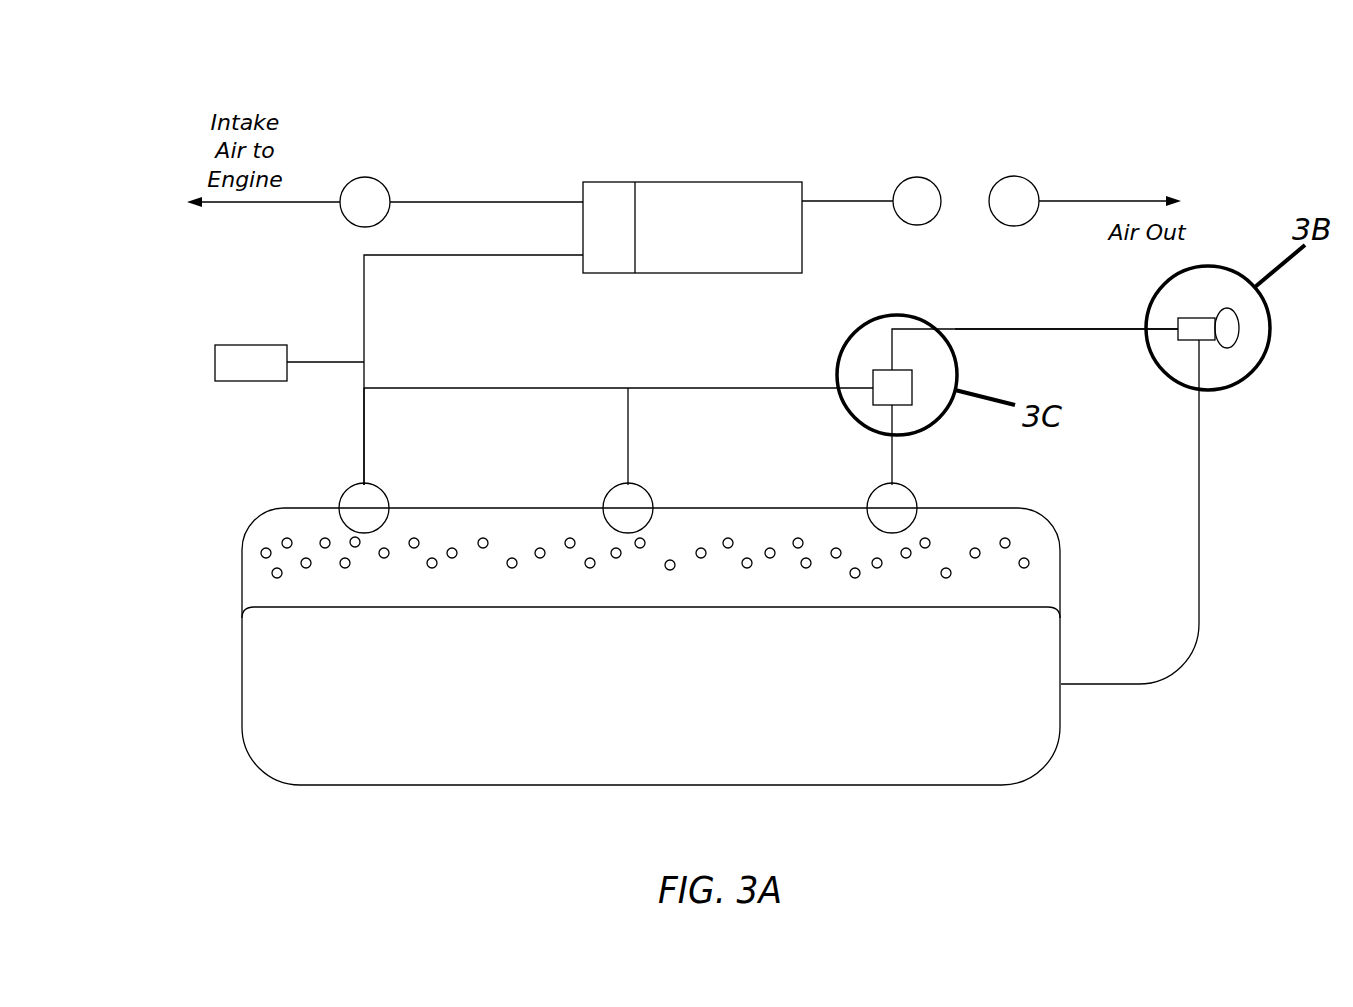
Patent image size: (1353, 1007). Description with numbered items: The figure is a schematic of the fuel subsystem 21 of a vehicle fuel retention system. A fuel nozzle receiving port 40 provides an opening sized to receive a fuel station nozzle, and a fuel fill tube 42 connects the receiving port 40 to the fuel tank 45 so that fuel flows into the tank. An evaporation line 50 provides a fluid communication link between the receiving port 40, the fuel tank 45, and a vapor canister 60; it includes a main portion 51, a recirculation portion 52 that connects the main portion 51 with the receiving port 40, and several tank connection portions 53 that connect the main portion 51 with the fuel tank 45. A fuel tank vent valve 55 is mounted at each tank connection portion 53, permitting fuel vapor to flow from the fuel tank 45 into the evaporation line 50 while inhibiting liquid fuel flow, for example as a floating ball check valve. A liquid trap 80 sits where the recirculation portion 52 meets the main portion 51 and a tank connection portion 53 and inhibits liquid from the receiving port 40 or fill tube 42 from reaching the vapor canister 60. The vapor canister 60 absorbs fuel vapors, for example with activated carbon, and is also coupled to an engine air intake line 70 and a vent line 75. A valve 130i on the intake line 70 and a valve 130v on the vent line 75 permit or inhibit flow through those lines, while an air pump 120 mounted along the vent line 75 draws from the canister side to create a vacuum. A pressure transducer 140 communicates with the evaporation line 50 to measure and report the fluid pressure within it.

The fuel subsystem 21 is at (387, 96).
The valve 130i is at (362, 178).
The engine air intake line 70 is at (467, 201).
The vapor canister 60 is at (745, 182).
The vent line 75 is at (830, 201).
The valve 130v is at (925, 225).
The air pump 120 is at (1014, 176).
The pressure transducer 140 is at (230, 345).
The evaporation line 50 is at (518, 388).
The main portion 51 is at (750, 388).
The recirculation portion 52 is at (1032, 328).
The liquid trap 80 is at (875, 370).
The fuel nozzle receiving port 40 is at (1230, 348).
The fuel fill tube 42 is at (1200, 550).
The tank connection portion 53 is at (364, 464).
The fuel tank vent valve 55 is at (378, 487).
The fuel tank 45 is at (1061, 720).